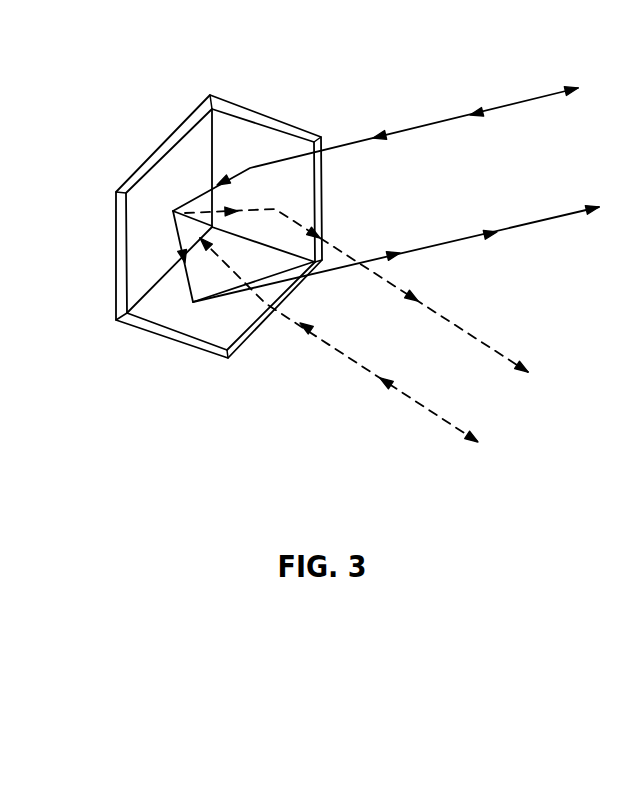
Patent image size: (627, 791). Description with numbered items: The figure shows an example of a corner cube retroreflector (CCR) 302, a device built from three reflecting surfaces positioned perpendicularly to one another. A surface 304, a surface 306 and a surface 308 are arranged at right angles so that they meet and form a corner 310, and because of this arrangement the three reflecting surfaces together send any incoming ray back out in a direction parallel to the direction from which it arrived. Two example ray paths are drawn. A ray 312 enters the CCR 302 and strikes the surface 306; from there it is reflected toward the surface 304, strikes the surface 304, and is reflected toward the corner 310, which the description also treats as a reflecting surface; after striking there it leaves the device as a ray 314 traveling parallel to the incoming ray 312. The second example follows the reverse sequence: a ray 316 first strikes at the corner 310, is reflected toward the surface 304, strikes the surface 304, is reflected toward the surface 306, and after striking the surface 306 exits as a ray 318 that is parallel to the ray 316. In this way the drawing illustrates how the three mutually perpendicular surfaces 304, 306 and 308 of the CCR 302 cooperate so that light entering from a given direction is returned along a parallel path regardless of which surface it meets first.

The corner cube retroreflector 302 is at (115, 205).
The surface 304 is at (152, 153).
The surface 306 is at (258, 138).
The surface 308 is at (152, 333).
The corner 310 is at (212, 228).
The ray 312 is at (522, 102).
The ray 314 is at (538, 221).
The ray 316 is at (435, 414).
The ray 318 is at (480, 342).